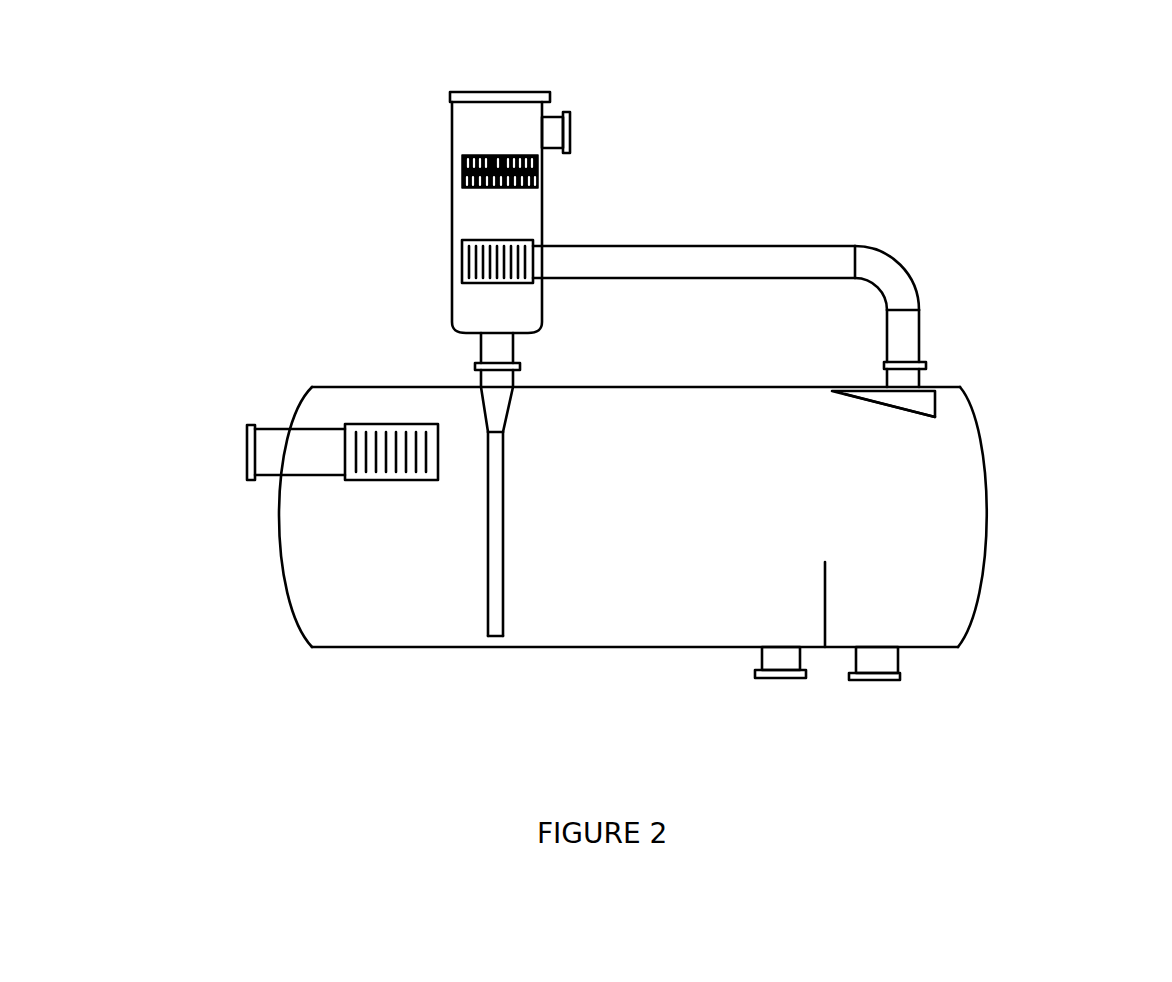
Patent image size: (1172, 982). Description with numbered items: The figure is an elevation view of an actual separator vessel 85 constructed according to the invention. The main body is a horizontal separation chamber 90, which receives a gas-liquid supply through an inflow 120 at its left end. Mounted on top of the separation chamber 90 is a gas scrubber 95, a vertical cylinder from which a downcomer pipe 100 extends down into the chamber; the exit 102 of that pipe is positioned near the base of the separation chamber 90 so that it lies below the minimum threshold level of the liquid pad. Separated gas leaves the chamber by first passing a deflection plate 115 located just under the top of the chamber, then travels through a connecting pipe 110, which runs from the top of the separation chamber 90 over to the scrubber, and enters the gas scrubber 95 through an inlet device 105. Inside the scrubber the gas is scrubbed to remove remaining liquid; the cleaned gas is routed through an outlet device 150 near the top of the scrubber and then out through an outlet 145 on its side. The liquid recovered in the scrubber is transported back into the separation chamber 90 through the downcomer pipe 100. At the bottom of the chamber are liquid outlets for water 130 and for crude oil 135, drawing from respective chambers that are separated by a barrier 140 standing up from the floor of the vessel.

The vessel 85 is at (1022, 166).
The separation chamber 90 is at (988, 444).
The gas scrubber 95 is at (543, 205).
The downcomer pipe 100 is at (512, 485).
The exit 102 is at (503, 635).
The inlet device 105 is at (463, 262).
The connecting pipe 110 is at (730, 246).
The deflection plate 115 is at (937, 408).
The inflow 120 is at (270, 480).
The liquid outlet for water 130 is at (770, 685).
The liquid outlet for crude oil 135 is at (884, 680).
The barrier 140 is at (833, 600).
The outlet 145 is at (572, 130).
The outlet device 150 is at (478, 153).